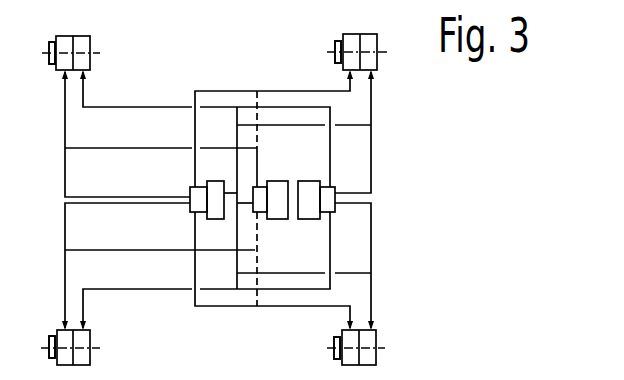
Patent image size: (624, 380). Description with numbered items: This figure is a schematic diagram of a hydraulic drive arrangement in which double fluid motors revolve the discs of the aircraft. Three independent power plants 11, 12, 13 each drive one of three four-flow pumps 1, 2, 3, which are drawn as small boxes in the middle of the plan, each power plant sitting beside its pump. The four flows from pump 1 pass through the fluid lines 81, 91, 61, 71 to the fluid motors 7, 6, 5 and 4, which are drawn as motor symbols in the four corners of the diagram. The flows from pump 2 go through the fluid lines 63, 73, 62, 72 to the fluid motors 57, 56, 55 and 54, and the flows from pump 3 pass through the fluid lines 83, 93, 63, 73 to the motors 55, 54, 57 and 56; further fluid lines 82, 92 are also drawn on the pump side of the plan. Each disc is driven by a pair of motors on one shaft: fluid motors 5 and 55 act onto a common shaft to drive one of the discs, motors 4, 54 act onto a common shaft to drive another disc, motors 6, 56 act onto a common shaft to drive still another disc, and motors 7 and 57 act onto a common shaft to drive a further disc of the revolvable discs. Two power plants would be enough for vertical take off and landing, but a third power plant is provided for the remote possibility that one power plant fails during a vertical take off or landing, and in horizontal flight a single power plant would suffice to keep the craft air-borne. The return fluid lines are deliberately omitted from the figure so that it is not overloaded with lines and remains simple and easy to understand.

The four flow pump 1 is at (198, 199).
The four flow pump 2 is at (260, 199).
The four flow pump 3 is at (327, 199).
The fluid motor 4 is at (76, 350).
The fluid motor 5 is at (71, 43).
The fluid motor 6 is at (360, 348).
The fluid motor 7 is at (357, 41).
The power plant 11 is at (215, 200).
The power plant 12 is at (277, 200).
The power plant 13 is at (309, 200).
The fluid motor 54 is at (83, 343).
The fluid motor 55 is at (90, 48).
The fluid motor 56 is at (366, 342).
The fluid motor 57 is at (371, 48).
The fluid line 61 is at (126, 133).
The fluid line 62 is at (161, 138).
The fluid line 63 is at (362, 131).
The fluid line 71 is at (126, 266).
The fluid line 72 is at (160, 261).
The fluid line 73 is at (362, 266).
The fluid line 81 is at (274, 128).
The connection line to motor 5 82 is at (205, 179).
The fluid line 83 is at (304, 147).
The fluid line 91 is at (274, 271).
The connection line to motor 4 92 is at (205, 210).
The fluid line 93 is at (304, 253).